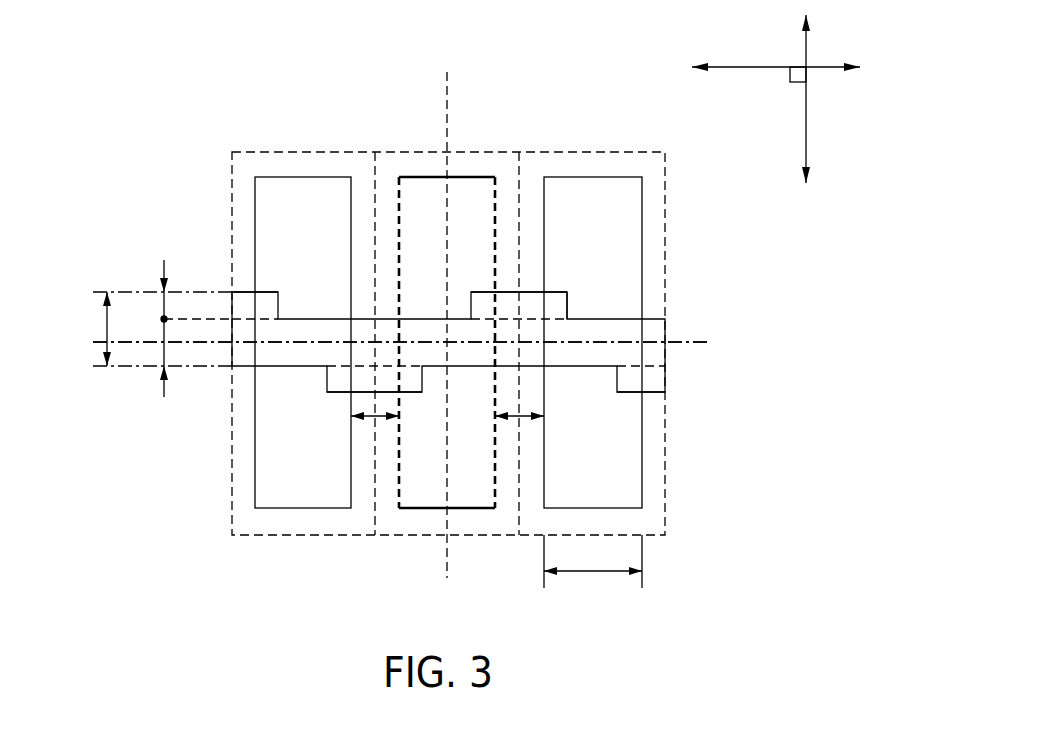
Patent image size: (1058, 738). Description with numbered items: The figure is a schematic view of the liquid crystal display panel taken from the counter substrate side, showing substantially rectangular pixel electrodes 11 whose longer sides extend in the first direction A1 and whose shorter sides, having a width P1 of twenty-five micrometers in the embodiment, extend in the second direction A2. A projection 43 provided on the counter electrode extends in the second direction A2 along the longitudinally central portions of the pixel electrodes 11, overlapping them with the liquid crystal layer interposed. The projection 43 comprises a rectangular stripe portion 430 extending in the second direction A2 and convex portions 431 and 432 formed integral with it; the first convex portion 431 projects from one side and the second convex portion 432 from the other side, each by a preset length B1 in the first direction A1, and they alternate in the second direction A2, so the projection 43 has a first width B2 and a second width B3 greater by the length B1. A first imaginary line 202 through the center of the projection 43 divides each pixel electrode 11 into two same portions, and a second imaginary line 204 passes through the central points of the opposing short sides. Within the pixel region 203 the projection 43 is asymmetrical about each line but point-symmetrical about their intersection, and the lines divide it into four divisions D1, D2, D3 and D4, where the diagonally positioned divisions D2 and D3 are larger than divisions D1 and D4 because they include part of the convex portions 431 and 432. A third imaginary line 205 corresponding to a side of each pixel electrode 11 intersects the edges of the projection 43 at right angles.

The pixel electrode 11 is at (420, 177).
The pixel region 203 is at (480, 170).
The second imaginary line 204 is at (447, 100).
The third imaginary line 205 is at (400, 505).
The projection 43 is at (668, 330).
The stripe portion 430 is at (623, 325).
The first convex portion 431 is at (243, 302).
The second convex portion 432 is at (338, 385).
The first imaginary line 202 is at (705, 345).
The preset length B1 is at (164, 305).
The first width B2 is at (164, 352).
The second width B3 is at (106, 329).
The division D1 is at (427, 335).
The division D2 is at (480, 303).
The division D3 is at (410, 383).
The division D4 is at (466, 355).
The width of the pixel electrodes P1 is at (590, 573).
The first direction A1 is at (806, 135).
The second direction A2 is at (747, 66).